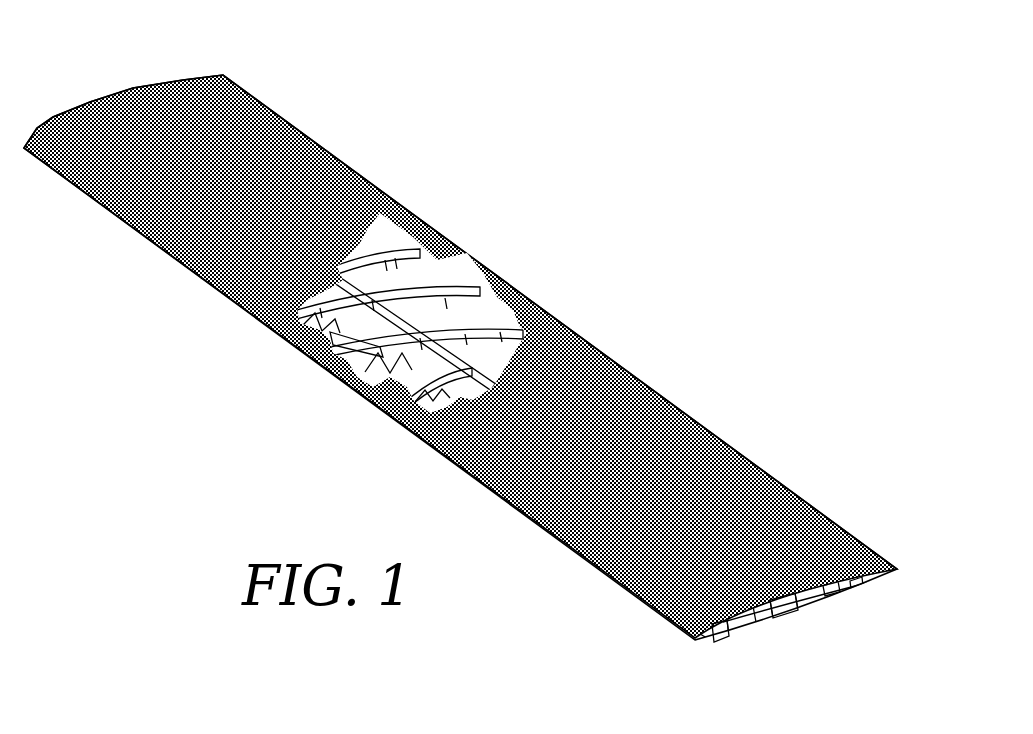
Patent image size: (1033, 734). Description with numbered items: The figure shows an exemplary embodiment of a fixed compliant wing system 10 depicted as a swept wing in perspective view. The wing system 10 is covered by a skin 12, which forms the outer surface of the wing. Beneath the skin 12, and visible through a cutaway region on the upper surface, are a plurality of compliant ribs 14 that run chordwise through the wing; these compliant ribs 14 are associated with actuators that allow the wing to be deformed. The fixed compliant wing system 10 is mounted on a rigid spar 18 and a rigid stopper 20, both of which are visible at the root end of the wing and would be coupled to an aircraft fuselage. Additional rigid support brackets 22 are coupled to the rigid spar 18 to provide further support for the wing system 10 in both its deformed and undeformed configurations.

The fixed compliant wing system 10 is at (460, 368).
The skin 12 is at (685, 519).
The compliant ribs 14 is at (413, 291).
The rigid spar 18 is at (790, 617).
The rigid stopper 20 is at (717, 643).
The rigid support brackets 22 is at (333, 362).